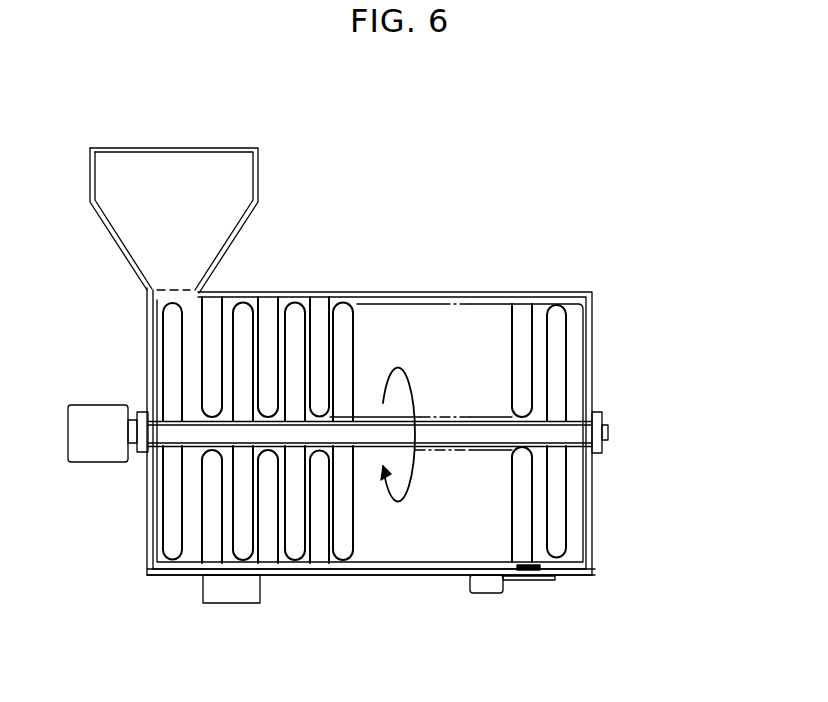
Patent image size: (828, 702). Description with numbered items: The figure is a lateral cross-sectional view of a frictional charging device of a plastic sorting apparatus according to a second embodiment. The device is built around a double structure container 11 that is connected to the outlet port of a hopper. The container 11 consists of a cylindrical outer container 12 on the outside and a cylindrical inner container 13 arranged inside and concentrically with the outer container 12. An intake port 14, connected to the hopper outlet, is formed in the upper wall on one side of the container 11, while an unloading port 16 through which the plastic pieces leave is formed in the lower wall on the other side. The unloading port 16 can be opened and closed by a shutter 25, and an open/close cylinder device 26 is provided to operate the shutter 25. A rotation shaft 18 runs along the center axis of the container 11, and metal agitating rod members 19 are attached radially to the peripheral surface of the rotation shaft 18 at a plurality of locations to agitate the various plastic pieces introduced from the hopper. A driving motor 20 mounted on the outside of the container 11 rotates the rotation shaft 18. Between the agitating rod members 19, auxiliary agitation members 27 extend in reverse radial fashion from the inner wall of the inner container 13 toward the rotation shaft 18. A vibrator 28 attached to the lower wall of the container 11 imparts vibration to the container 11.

The container 11 is at (436, 411).
The outer container 12 is at (592, 302).
The inner container 13 is at (588, 332).
The intake port 14 is at (162, 277).
The unloading port 16 is at (572, 563).
The rotation shaft 18 is at (583, 432).
The agitating rod members 19 is at (302, 325).
The driving motor 20 is at (88, 405).
The shutter 25 is at (564, 580).
The open/close cylinder device 26 is at (486, 590).
The auxiliary agitation members 27 is at (270, 303).
The vibrator 28 is at (233, 592).